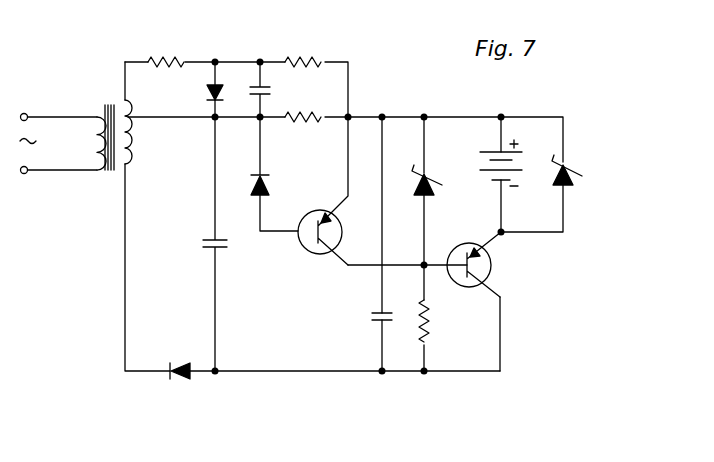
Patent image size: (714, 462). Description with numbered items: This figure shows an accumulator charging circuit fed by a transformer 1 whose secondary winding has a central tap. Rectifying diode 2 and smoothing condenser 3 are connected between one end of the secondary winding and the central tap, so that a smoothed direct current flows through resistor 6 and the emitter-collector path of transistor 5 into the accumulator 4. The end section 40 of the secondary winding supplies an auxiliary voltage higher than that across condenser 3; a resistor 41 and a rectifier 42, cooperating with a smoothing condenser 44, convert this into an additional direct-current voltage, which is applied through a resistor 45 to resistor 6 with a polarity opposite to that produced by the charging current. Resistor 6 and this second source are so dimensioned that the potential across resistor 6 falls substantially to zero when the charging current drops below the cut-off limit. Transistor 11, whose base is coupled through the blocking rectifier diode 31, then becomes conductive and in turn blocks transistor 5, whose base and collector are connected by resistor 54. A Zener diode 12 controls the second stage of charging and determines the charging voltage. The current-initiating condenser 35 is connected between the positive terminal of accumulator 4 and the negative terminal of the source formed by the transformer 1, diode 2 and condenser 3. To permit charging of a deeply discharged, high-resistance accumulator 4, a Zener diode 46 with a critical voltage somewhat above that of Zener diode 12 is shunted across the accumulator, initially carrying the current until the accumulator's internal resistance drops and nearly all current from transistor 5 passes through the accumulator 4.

The transformer 1 is at (52, 173).
The end section of the secondary winding 40 is at (122, 100).
The resistor 41 is at (178, 56).
The resistor 45 is at (312, 57).
The resistor 6 is at (316, 122).
The rectifier 42 is at (203, 90).
The smoothing condenser 44 is at (272, 90).
The blocking rectifier diode 31 is at (272, 182).
The transistor 11 is at (308, 257).
The condenser 3 is at (228, 250).
The rectifier 2 is at (176, 383).
The current-initiating condenser 35 is at (374, 322).
The resistor 54 is at (434, 317).
The Zener diode 12 is at (430, 172).
The accumulator 4 is at (522, 163).
The Zener diode 46 is at (568, 167).
The transistor 5 is at (495, 262).